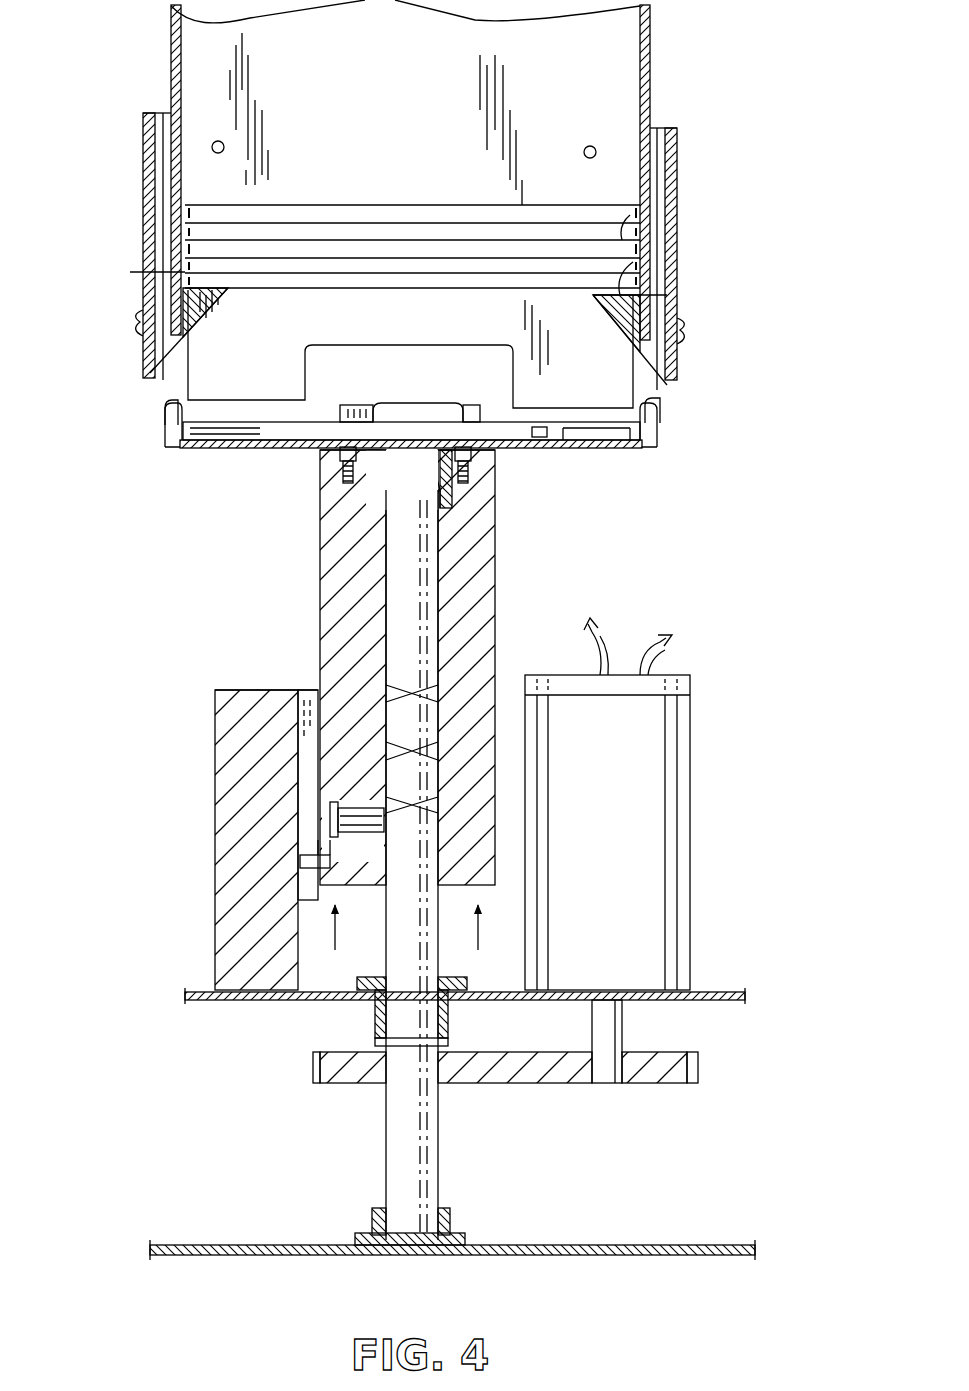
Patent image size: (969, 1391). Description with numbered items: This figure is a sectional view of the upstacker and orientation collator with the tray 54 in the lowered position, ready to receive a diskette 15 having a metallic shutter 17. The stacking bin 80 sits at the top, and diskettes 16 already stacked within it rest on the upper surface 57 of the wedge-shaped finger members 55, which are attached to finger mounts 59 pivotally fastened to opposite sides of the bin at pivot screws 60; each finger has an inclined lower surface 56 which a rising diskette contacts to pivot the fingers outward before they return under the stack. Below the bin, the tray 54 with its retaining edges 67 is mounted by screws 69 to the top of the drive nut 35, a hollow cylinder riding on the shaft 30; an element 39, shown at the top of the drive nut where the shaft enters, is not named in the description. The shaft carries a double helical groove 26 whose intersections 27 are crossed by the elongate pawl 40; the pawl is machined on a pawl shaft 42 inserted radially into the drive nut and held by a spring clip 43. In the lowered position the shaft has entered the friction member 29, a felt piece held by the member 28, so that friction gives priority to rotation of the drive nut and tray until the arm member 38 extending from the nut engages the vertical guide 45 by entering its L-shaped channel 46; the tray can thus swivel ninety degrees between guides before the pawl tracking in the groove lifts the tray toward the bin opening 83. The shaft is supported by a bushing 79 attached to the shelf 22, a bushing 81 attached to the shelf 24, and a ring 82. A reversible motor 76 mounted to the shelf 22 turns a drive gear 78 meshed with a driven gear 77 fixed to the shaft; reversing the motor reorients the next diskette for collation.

The diskette 15 is at (600, 448).
The diskettes 16 is at (645, 212).
The metallic shutter 17 is at (295, 448).
The shelf 22 is at (718, 992).
The shelf 24 is at (580, 1245).
The double helical groove 26 is at (432, 693).
The intersections 27 is at (365, 810).
The member 28 is at (372, 480).
The friction member 29 is at (385, 505).
The shaft 30 is at (398, 1172).
The drive nut 35 is at (497, 598).
The arm member 38 is at (338, 862).
The nut 39 is at (415, 462).
The pawl 40 is at (420, 840).
The pawl shaft 42 is at (300, 700).
The spring clip 43 is at (310, 858).
The vertical guide 45 is at (222, 908).
The L-shaped channel 46 is at (300, 795).
The tray 54 is at (545, 440).
The wedge-shaped finger member 55 is at (205, 305).
The inclined lower surface 56 is at (175, 362).
The upper surface 57 is at (183, 268).
The finger mount 59 is at (146, 250).
The pivot screw 60 is at (220, 141).
The retaining edge 67 is at (168, 430).
The screw 69 is at (345, 415).
The reversible motor 76 is at (574, 860).
The driven gear 77 is at (358, 1085).
The drive gear 78 is at (558, 1085).
The bushing 79 is at (375, 1012).
The stacking bin 80 is at (652, 72).
The bushing 81 is at (450, 1230).
The ring 82 is at (448, 1042).
The bin opening 83 is at (258, 392).